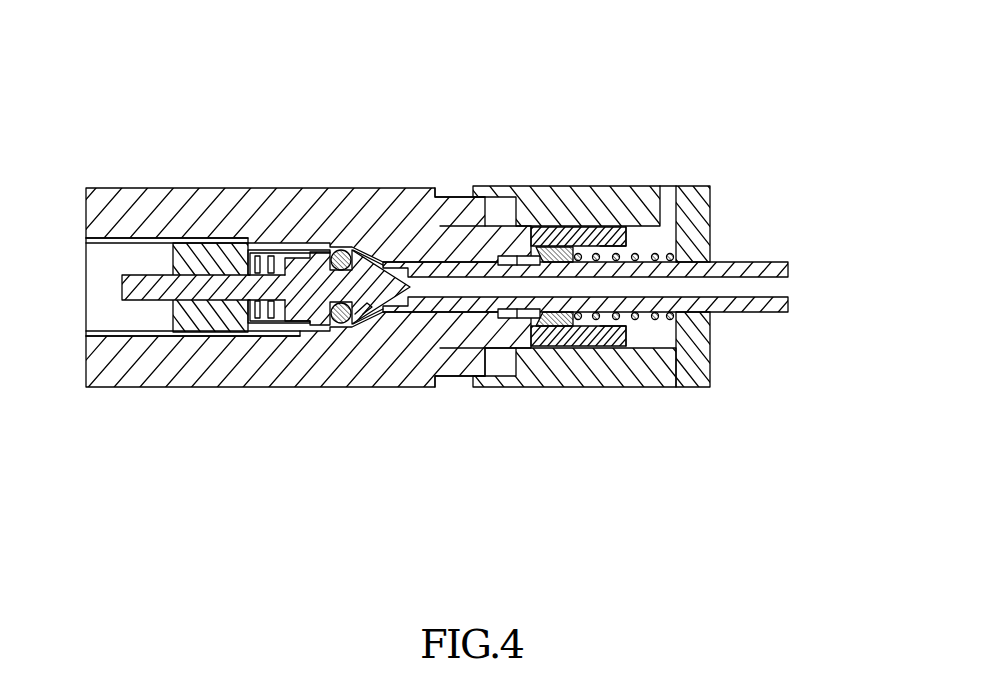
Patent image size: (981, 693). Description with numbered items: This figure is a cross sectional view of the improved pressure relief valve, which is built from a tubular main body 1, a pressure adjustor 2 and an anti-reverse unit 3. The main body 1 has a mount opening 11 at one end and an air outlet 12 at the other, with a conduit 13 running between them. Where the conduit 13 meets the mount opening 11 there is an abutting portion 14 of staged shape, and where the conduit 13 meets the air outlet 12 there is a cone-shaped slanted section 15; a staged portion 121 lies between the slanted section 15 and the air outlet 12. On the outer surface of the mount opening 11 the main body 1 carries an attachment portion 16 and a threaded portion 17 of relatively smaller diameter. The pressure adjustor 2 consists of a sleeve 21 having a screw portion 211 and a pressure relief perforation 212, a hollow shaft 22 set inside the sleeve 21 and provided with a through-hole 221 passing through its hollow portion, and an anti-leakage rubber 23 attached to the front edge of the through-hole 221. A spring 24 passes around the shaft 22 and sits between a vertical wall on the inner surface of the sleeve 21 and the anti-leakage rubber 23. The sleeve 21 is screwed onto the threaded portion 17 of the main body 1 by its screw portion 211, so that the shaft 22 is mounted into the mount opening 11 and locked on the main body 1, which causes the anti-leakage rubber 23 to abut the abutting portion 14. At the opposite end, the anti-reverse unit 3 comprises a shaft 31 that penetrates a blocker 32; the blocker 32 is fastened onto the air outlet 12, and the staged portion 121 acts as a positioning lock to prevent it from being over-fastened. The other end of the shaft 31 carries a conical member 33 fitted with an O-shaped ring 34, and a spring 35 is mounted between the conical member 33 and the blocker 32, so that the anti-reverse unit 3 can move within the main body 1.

The tubular main body 1 is at (322, 181).
The mount opening 11 is at (634, 327).
The air outlet 12 is at (93, 285).
The staged portion 121 is at (245, 338).
The conduit 13 is at (500, 350).
The abutting portion 14 is at (530, 333).
The slanted section 15 is at (357, 321).
The attachment portion 16 is at (450, 376).
The threaded portion 17 is at (557, 227).
The pressure adjustor 2 is at (609, 259).
The sleeve 21 is at (614, 220).
The screw portion 211 is at (642, 228).
The pressure relief perforation 212 is at (667, 192).
The hollow shaft 22 is at (730, 262).
The through-hole 221 is at (517, 258).
The anti-leakage rubber 23 is at (558, 322).
The spring 24 is at (648, 320).
The anti-reverse unit 3 is at (305, 333).
The shaft 31 is at (152, 277).
The blocker 32 is at (212, 336).
The conical member 33 is at (354, 311).
The O-shaped ring 34 is at (348, 249).
The spring 35 is at (268, 243).